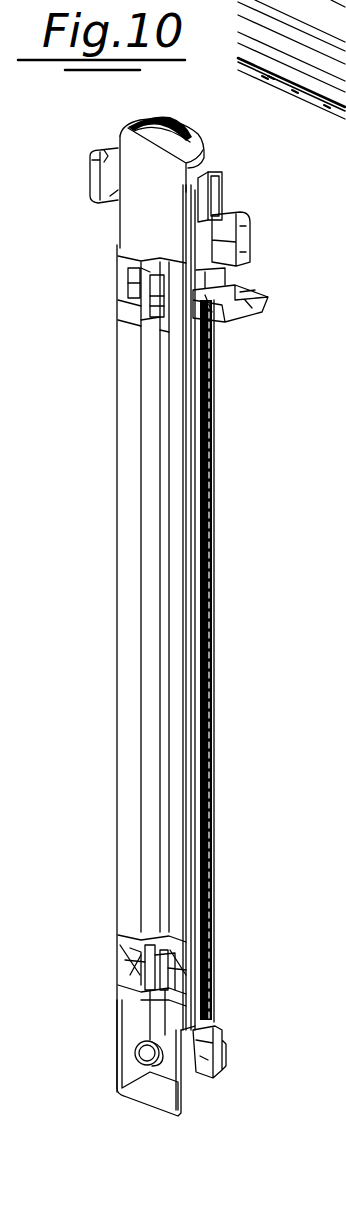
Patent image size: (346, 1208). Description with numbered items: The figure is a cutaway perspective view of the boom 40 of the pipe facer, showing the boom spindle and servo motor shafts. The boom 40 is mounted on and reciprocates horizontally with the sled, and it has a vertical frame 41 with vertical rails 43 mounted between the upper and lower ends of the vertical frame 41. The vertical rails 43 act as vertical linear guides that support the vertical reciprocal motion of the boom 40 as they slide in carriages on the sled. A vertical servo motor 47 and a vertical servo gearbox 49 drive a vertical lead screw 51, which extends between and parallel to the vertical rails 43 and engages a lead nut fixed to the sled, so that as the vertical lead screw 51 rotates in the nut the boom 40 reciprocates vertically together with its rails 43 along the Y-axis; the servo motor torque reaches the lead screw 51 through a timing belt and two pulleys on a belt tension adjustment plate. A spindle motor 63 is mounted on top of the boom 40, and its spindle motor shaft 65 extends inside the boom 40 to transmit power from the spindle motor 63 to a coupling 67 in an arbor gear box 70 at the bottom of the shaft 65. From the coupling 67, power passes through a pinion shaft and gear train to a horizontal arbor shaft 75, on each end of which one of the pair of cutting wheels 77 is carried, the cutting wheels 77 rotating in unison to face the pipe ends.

The boom 40 is at (238, 581).
The vertical frame 41 is at (116, 668).
The vertical rails 43 is at (214, 417).
The vertical servo motor 47 is at (252, 243).
The vertical servo gearbox 49 is at (228, 300).
The vertical lead screw 51 is at (215, 481).
The spindle motor 63 is at (204, 163).
The spindle motor shaft 65 is at (142, 477).
The coupling 67 is at (128, 990).
The arbor gear box 70 is at (120, 1062).
The horizontal arbor shaft 75 is at (160, 1067).
The cutting wheels 77 is at (214, 1063).